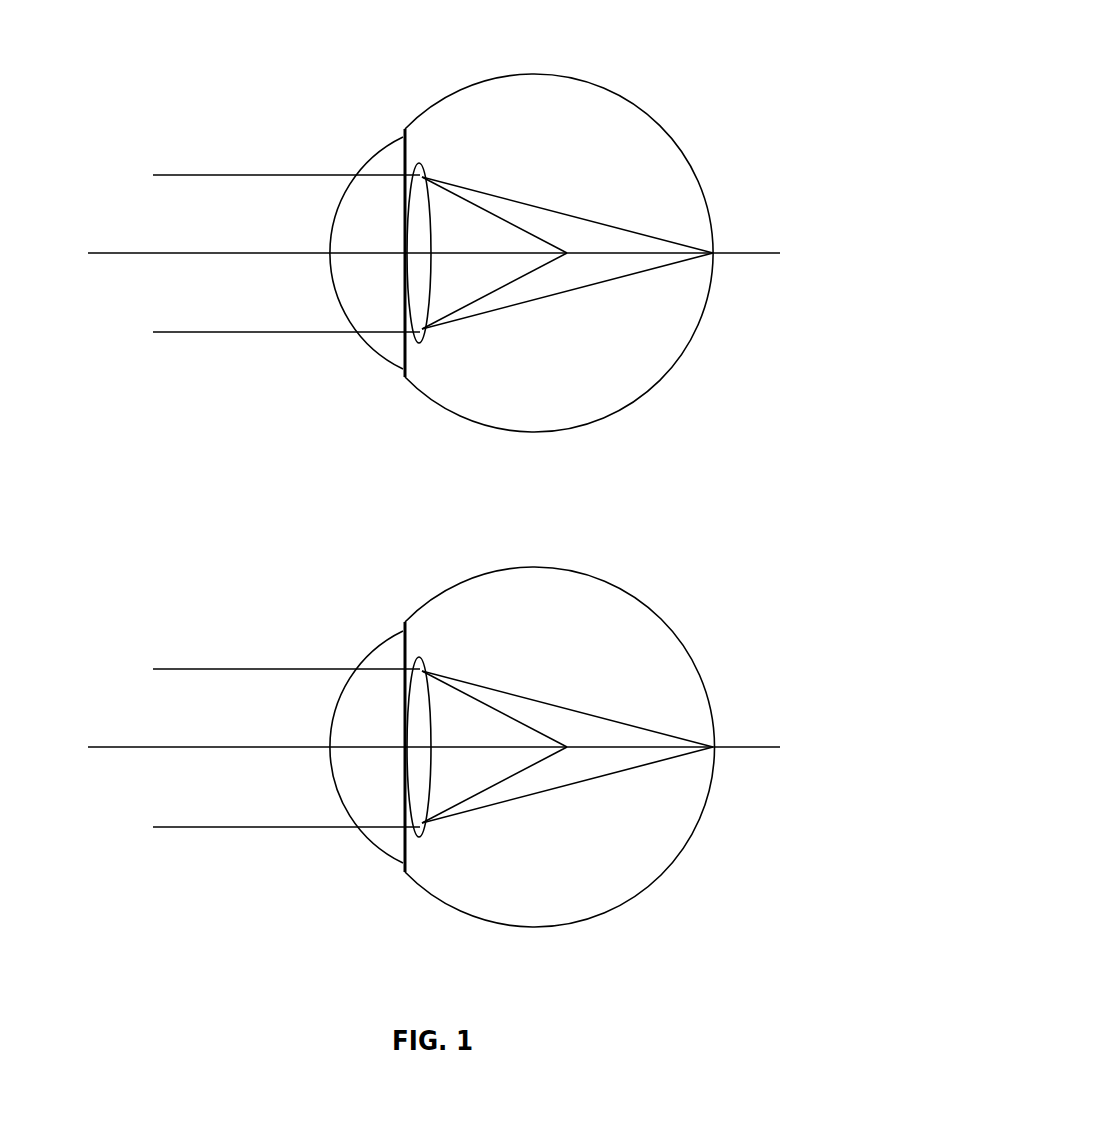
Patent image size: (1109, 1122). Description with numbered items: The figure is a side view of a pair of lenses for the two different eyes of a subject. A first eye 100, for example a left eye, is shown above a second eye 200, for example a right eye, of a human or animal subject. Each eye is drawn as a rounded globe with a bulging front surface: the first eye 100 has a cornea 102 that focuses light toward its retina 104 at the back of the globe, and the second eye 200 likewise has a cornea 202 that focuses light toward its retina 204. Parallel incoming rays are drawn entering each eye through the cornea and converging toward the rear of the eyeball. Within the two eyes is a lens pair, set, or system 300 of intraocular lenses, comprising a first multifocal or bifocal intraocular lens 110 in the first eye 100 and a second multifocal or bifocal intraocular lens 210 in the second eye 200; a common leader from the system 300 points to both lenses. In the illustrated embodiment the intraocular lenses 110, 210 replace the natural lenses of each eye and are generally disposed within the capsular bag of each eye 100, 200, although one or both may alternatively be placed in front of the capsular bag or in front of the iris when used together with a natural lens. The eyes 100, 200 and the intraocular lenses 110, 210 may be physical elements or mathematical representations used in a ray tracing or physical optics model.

The first eye 100 is at (677, 64).
The cornea 102 is at (375, 152).
The retina 104 is at (702, 197).
The first multifocal or bifocal intraocular lens 110 is at (432, 205).
The second eye 200 is at (713, 636).
The cornea 202 is at (378, 647).
The retina 204 is at (703, 690).
The second multifocal or bifocal intraocular lens 210 is at (433, 792).
The lens pair or system of intraocular lenses 300 is at (444, 276).